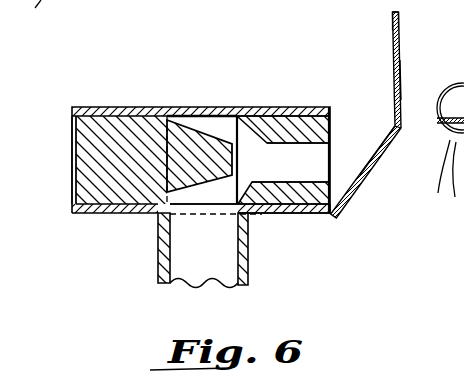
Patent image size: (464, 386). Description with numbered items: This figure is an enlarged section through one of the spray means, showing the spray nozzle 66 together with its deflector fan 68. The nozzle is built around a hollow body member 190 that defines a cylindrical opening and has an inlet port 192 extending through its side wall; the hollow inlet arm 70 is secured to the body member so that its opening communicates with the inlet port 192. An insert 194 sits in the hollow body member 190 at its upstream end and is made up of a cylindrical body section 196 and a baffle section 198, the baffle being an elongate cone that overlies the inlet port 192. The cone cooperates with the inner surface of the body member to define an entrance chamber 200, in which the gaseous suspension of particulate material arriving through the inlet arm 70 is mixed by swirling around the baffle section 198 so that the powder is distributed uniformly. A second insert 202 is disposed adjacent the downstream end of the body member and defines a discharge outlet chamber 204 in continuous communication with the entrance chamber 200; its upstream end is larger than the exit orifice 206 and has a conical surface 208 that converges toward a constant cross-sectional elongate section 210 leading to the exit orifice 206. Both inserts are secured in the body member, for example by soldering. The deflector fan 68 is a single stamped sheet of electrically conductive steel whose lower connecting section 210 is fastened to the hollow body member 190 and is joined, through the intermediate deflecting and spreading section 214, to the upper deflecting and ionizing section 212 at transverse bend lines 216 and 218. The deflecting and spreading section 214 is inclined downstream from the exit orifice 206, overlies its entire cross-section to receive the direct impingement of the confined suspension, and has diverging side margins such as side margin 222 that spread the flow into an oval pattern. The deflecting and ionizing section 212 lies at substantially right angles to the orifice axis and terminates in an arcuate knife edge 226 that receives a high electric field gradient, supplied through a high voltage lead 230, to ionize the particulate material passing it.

The spray nozzle 66 is at (88, 107).
The deflector fan 68 is at (394, 46).
The inlet arm 70 is at (247, 273).
The hollow body member 190 is at (215, 110).
The inlet port 192 is at (158, 237).
The insert 194 is at (72, 145).
The cylindrical body section 196 is at (102, 165).
The baffle section 198 is at (185, 145).
The entrance chamber 200 is at (220, 130).
The second insert 202 is at (325, 135).
The discharge outlet chamber 204 is at (284, 145).
The exit orifice 206 is at (331, 160).
The conical surface 208 is at (260, 182).
The lower connecting section 210 is at (313, 181).
The upper deflecting and ionizing section 212 is at (400, 68).
The intermediate deflecting and spreading section 214 is at (373, 168).
The transverse bend line 216 is at (334, 219).
The transverse bend line 218 is at (401, 130).
The diverging side margin 222 is at (458, 195).
The knife edge 226 is at (393, 13).
The high voltage lead 230 is at (62, 8).